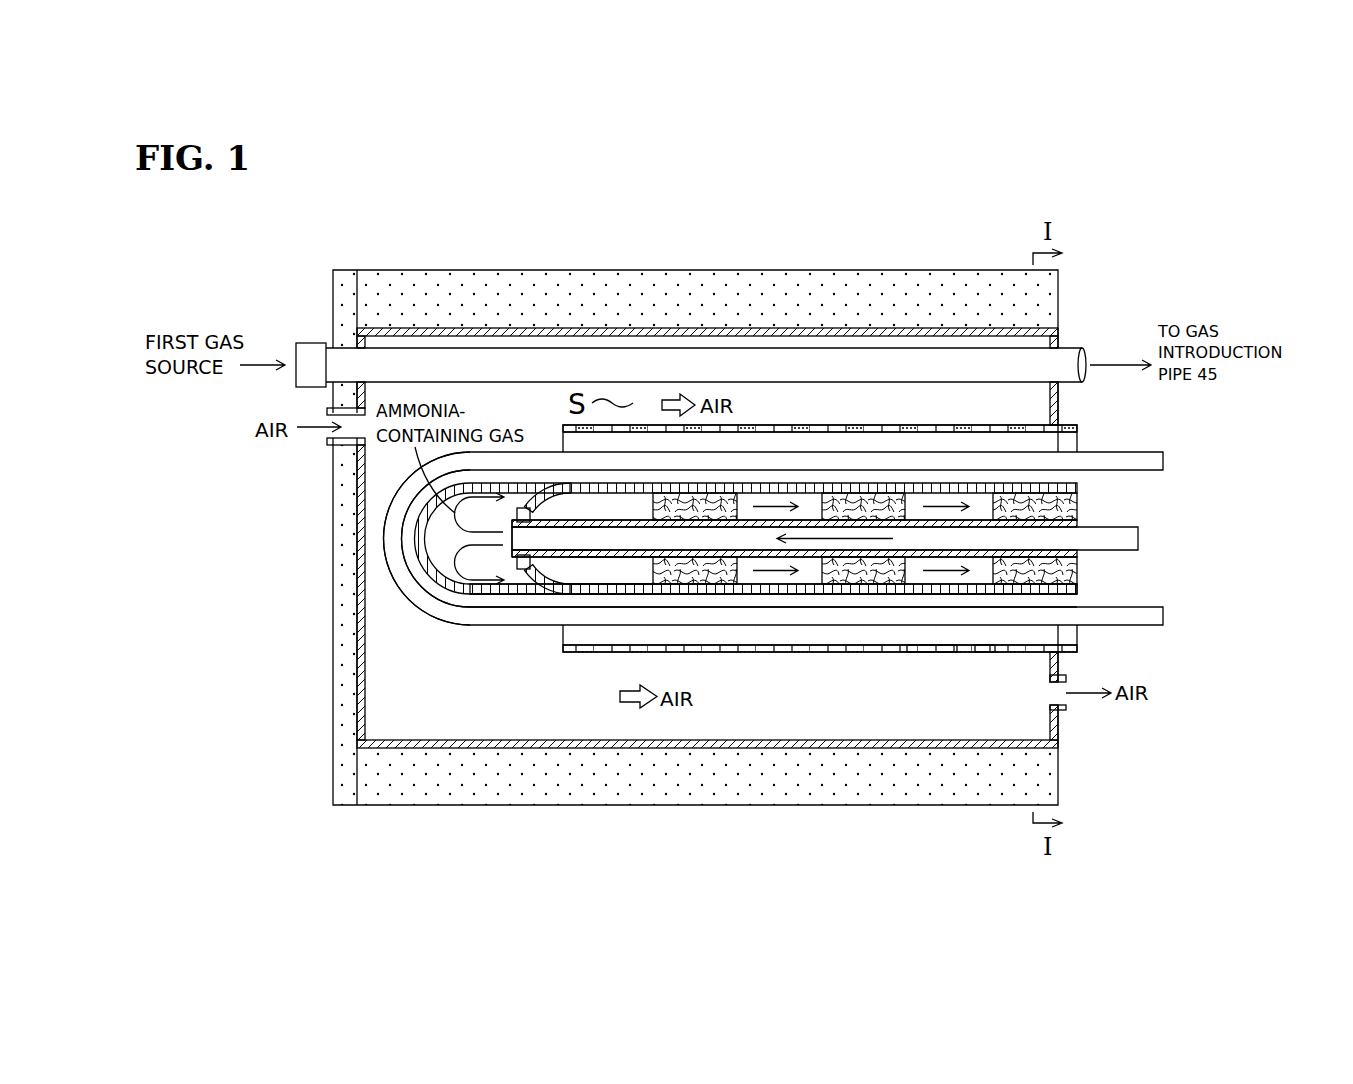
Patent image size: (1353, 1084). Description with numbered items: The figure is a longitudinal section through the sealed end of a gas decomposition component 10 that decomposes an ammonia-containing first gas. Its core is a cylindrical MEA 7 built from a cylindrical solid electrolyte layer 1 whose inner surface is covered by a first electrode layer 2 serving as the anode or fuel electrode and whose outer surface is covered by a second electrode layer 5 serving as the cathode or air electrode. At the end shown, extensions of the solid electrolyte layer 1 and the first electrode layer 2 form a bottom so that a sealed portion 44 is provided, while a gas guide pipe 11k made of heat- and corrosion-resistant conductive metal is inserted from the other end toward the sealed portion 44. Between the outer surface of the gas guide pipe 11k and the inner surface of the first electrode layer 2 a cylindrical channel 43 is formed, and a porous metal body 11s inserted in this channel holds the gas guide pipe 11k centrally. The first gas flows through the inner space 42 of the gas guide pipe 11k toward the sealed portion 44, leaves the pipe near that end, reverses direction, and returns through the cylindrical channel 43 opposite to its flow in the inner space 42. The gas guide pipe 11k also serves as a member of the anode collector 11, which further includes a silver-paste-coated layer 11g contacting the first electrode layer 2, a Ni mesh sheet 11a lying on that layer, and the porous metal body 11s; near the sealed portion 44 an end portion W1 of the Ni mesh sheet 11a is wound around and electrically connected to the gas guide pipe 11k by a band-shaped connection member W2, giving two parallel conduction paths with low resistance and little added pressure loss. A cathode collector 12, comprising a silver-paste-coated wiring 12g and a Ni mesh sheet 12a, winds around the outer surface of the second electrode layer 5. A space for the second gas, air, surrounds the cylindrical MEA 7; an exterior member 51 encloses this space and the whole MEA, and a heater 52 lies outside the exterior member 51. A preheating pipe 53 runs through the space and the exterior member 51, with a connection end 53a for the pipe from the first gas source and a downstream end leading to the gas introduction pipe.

The solid electrolyte layer 1 is at (1165, 460).
The first electrode layer 2 is at (1077, 478).
The second electrode layer 5 is at (1077, 440).
The cylindrical MEA 7 is at (822, 528).
The gas decomposition component 10 is at (1152, 419).
The anode collector 11 is at (866, 589).
The gas guide pipe 11k is at (1140, 530).
The porous metal body 11s is at (1077, 570).
The Ni mesh sheet 11a is at (1077, 588).
The silver-paste-coated layer 11g is at (840, 639).
The cathode collector 12 is at (820, 692).
The silver-paste-coated wiring 12g is at (957, 655).
The Ni mesh sheet 12a is at (986, 671).
The inner space 42 is at (573, 537).
The cylindrical channel 43 is at (603, 568).
The sealed portion 44 is at (388, 562).
The exterior member 51 is at (797, 332).
The heater 52 is at (690, 292).
The preheating pipe 53 is at (872, 362).
The connection end 53a is at (313, 352).
The end portion of Ni mesh sheet W1 is at (534, 580).
The band-shaped connection member W2 is at (520, 570).